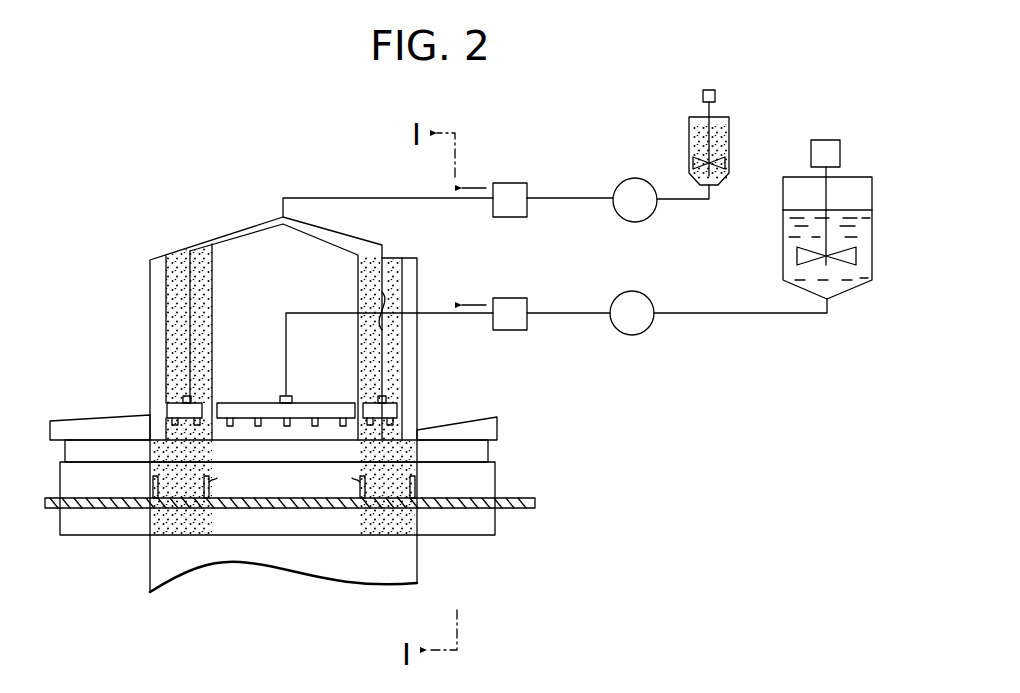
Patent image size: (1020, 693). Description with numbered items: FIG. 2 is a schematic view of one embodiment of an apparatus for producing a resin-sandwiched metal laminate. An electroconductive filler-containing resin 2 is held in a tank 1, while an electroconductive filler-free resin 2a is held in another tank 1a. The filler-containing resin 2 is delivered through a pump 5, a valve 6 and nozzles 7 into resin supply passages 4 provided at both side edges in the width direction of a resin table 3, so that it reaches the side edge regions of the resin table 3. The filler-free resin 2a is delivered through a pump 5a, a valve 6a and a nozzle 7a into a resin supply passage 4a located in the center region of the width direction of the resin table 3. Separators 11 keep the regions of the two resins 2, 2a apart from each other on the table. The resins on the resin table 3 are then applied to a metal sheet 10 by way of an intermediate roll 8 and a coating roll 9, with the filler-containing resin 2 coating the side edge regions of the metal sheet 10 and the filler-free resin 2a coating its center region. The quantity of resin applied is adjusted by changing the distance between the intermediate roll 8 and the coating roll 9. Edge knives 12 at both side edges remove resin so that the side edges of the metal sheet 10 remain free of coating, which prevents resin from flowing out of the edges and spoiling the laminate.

The tank 1 is at (730, 133).
The tank 1a is at (860, 177).
The electroconductive filler-containing resin 2 is at (176, 306).
The electroconductive filler-free resin 2a is at (242, 260).
The resin table 3 is at (527, 510).
The resin supply passages 4 is at (198, 243).
The resin supply passage 4a is at (285, 357).
The pump 5 is at (625, 179).
The pump 5a is at (648, 296).
The valve 6 is at (510, 183).
The valve 6a is at (513, 298).
The nozzles 7 is at (168, 394).
The nozzle 7a is at (326, 402).
The intermediate roll 8 is at (486, 498).
The coating roll 9 is at (80, 450).
The metal sheet 10 is at (362, 560).
The separators 11 is at (152, 482).
The edge knives 12 is at (97, 428).